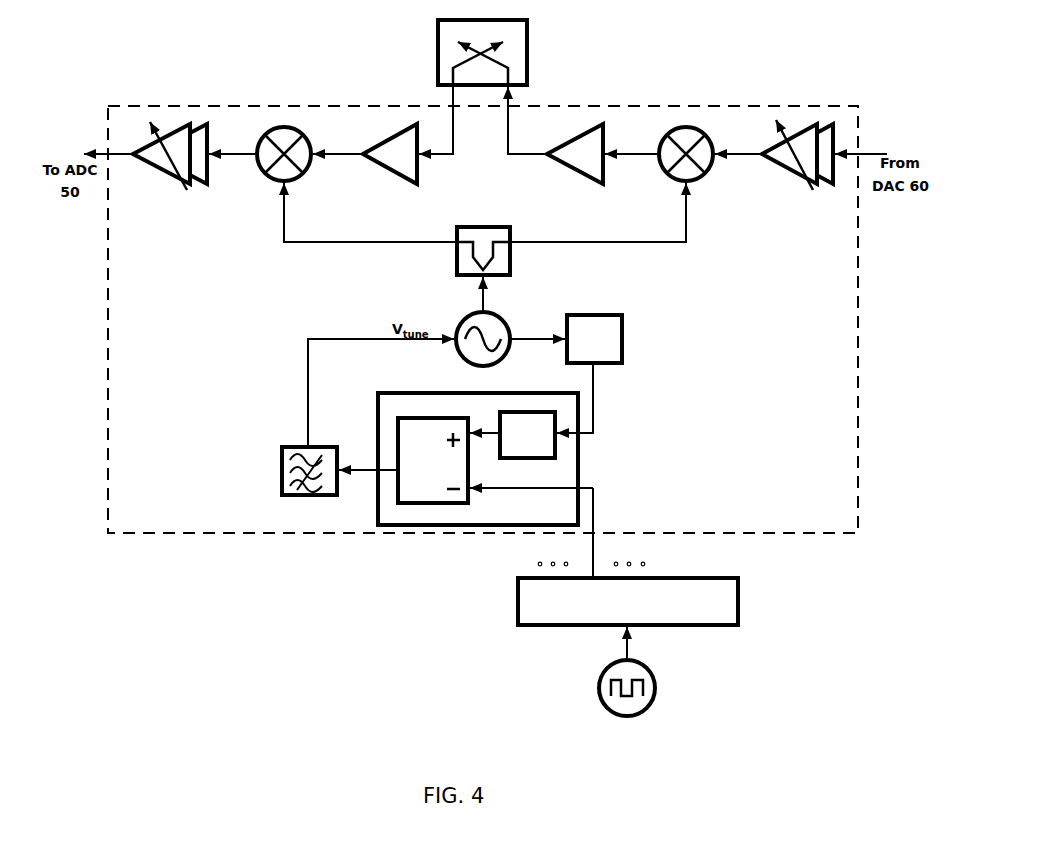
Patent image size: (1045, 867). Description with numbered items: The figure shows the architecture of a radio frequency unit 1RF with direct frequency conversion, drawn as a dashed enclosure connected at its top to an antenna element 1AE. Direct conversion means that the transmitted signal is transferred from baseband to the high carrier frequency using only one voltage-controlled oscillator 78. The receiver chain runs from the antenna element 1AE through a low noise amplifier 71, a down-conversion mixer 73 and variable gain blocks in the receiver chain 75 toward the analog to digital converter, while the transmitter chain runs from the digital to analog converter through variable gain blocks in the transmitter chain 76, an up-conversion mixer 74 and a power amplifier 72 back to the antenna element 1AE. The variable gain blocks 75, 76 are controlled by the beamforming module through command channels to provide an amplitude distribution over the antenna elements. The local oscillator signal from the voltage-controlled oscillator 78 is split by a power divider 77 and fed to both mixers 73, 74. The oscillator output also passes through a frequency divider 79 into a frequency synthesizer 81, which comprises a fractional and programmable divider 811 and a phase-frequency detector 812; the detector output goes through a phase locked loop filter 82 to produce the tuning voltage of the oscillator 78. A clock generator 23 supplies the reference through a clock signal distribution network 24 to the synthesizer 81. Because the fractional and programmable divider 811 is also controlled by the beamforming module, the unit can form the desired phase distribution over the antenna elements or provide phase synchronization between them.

The radio frequency unit 1RF is at (638, 105).
The antenna element 1AE is at (506, 52).
The low noise amplifier 71 is at (390, 154).
The power amplifier 72 is at (575, 154).
The down-conversion mixer 73 is at (292, 151).
The up-conversion mixer 74 is at (672, 151).
The variable gain blocks in receiver chain 75 is at (185, 155).
The variable gain blocks in transmitter chain 76 is at (788, 155).
The power divider 77 is at (483, 239).
The voltage-controlled oscillator 78 is at (490, 333).
The frequency divider 79 is at (608, 339).
The frequency synthesizer 81 is at (485, 459).
The fractional and programmable divider 811 is at (527, 435).
The phase-frequency detector 812 is at (433, 460).
The phase locked loop filter 82 is at (303, 458).
The clock signal distribution network 24 is at (628, 593).
The clock generator 23 is at (641, 688).